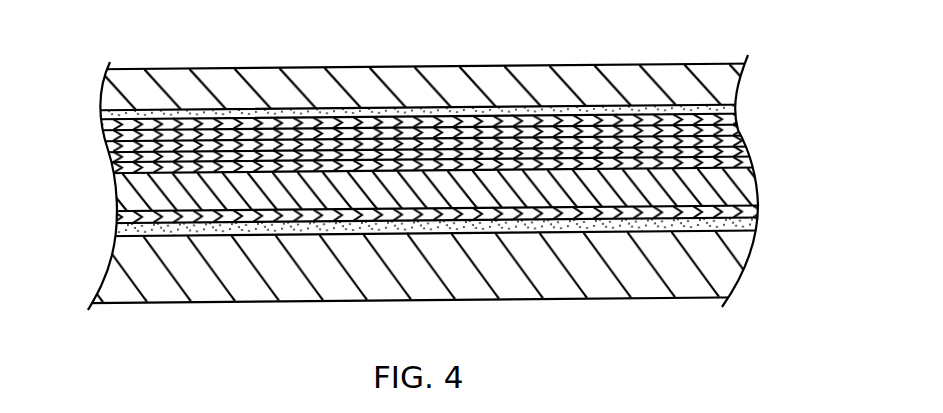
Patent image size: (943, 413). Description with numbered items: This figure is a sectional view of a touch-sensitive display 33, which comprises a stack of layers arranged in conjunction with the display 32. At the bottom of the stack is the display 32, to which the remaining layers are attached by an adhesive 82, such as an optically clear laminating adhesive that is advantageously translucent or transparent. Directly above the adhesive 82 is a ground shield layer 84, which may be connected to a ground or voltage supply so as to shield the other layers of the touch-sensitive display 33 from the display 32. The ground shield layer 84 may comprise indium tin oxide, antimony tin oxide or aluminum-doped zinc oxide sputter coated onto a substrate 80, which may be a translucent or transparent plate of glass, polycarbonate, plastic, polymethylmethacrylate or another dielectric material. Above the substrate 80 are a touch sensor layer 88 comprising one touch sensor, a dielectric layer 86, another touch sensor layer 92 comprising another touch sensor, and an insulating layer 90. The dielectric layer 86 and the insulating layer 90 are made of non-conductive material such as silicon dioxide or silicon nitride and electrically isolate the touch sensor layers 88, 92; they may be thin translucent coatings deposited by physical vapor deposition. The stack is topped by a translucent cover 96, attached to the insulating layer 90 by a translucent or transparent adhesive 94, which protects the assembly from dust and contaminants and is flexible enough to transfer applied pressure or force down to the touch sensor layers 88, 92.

The display 32 is at (728, 273).
The touch-sensitive display 33 is at (159, 370).
The cover 96 is at (173, 80).
The adhesive 94 is at (100, 116).
The insulating layer 90 is at (105, 128).
The touch sensor layer 92 is at (107, 142).
The dielectric layer 86 is at (115, 151).
The touch sensor layer 88 is at (118, 168).
The substrate 80 is at (136, 185).
The ground shield layer 84 is at (134, 217).
The adhesive 82 is at (113, 255).